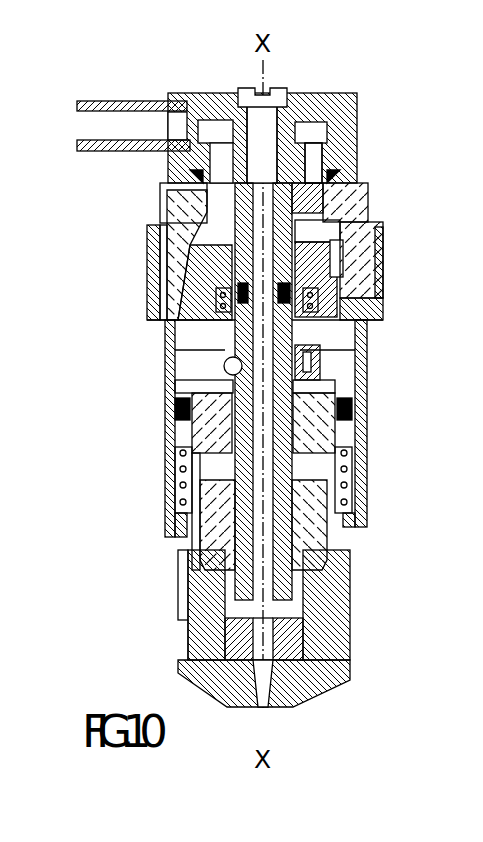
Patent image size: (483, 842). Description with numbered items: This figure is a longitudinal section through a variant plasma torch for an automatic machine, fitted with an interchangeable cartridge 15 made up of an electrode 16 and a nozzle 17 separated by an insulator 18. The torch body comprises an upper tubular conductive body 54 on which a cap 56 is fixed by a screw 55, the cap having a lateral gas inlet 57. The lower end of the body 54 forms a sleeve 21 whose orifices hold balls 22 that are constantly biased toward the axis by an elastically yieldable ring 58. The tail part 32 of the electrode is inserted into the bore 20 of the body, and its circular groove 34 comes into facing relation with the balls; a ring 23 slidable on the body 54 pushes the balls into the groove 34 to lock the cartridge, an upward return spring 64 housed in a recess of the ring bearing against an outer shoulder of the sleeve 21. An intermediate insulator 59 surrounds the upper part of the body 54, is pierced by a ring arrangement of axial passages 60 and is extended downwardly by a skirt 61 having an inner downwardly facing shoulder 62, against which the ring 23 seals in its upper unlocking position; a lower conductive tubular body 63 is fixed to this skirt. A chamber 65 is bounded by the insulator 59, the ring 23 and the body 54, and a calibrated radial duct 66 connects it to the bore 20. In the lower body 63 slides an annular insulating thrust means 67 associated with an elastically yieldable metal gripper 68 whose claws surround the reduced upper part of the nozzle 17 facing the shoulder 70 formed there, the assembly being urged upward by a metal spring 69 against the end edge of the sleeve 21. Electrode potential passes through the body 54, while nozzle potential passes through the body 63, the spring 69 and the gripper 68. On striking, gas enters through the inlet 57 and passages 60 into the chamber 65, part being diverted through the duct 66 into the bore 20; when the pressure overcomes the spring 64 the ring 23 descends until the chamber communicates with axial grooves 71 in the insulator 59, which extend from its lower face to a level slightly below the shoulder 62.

The interchangeable cartridge 15 is at (165, 616).
The electrode 16 is at (290, 618).
The nozzle 17 is at (212, 668).
The insulator 18 is at (180, 586).
The bore 20 is at (170, 196).
The sleeve 21 is at (175, 312).
The balls 22 is at (175, 362).
The ring 23 is at (370, 300).
The tail part 32 is at (200, 435).
The circular groove 34 is at (226, 370).
The upper tubular conductive body 54 is at (318, 300).
The screw 55 is at (280, 97).
The cap 56 is at (348, 115).
The lateral gas inlet 57 is at (158, 128).
The elastically yieldable ring 58 is at (316, 372).
The intermediate insulator 59 is at (345, 201).
The axial passages 60 is at (312, 158).
The skirt 61 is at (152, 242).
The inner downwardly facing shoulder 62 is at (372, 262).
The lower conductive tubular body 63 is at (172, 470).
The upward return spring 64 is at (365, 346).
The chamber 65 is at (322, 228).
The calibrated radial duct 66 is at (185, 206).
The annular electrically insulating thrust means 67 is at (340, 430).
The elastically yieldable metal gripper 68 is at (330, 530).
The metal spring 69 is at (180, 508).
The shoulder 70 is at (190, 560).
The axial grooves 71 is at (166, 294).